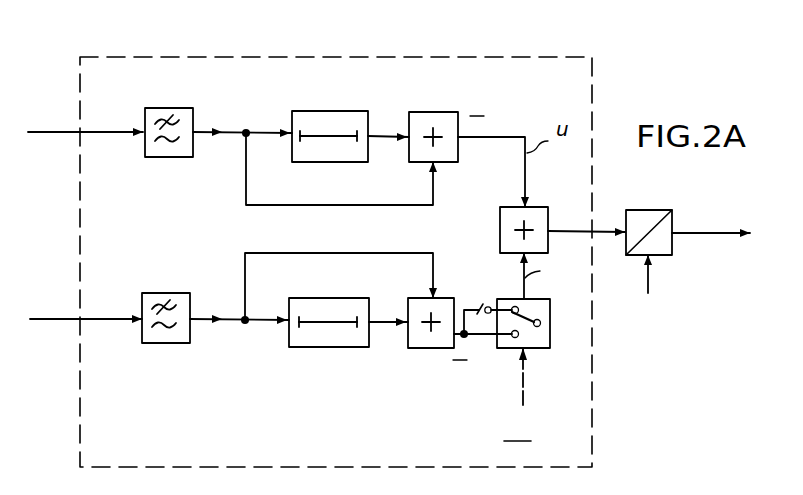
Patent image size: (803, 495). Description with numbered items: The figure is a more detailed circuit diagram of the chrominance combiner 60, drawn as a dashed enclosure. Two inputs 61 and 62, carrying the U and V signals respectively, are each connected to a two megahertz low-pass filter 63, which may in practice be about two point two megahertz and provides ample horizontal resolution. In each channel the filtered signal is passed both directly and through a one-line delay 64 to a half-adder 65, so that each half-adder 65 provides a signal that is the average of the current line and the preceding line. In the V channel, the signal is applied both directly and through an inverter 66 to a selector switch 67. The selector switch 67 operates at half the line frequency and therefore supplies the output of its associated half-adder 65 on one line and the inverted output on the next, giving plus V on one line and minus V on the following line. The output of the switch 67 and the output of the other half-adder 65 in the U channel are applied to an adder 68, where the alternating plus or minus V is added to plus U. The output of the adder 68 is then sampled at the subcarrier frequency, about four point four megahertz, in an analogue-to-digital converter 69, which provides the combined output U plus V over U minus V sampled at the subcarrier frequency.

The chrominance combiner 60 is at (336, 245).
The U input 61 is at (112, 134).
The V input 62 is at (108, 319).
The 2 MHz low-pass filter 63 is at (170, 100).
The one-line delay 64 is at (331, 162).
The half-adder 65 is at (458, 158).
The inverter 66 is at (480, 310).
The selector switch 67 is at (550, 311).
The adder 68 is at (548, 210).
The analogue-to-digital converter 69 is at (672, 253).